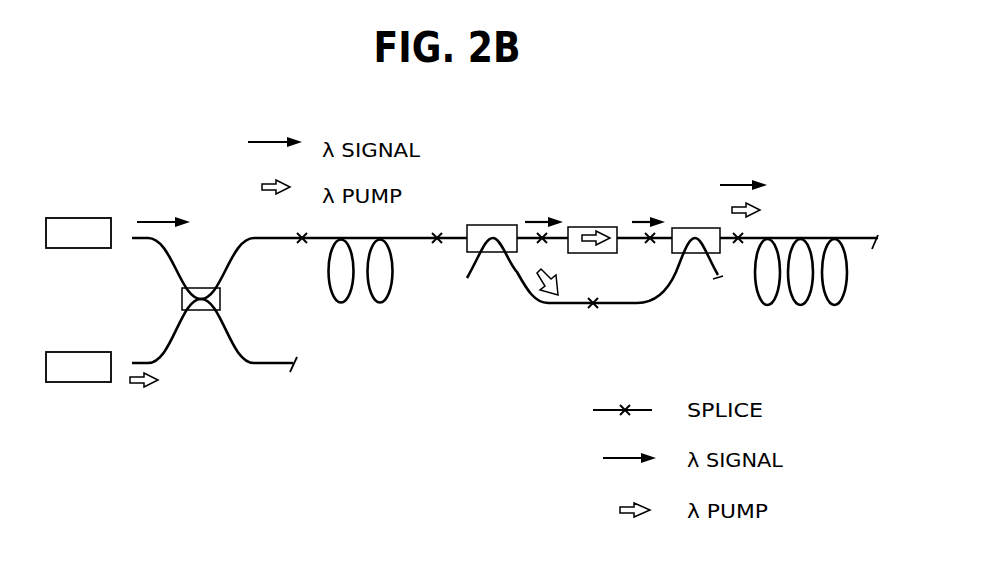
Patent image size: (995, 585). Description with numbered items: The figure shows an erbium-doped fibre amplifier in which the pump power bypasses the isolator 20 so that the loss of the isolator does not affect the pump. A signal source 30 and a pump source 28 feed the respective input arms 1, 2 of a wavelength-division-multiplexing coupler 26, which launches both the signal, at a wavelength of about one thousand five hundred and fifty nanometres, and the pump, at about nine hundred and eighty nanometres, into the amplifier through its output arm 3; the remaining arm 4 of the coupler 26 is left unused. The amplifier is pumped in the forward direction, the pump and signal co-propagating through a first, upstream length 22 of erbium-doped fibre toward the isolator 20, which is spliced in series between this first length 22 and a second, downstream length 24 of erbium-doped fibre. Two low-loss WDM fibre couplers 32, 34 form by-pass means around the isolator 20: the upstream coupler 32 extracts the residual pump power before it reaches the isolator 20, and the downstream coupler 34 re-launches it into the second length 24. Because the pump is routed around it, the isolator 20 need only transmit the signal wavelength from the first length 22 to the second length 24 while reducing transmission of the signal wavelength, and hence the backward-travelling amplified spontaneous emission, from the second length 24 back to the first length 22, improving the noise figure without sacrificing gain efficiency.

The input arm 1 is at (166, 268).
The input arm 2 is at (166, 331).
The output arm 3 is at (268, 266).
The coupler output port 4 is at (249, 335).
The fibre isolator 20 is at (592, 255).
The first length of erbium-doped fibre 22 is at (362, 324).
The second length of erbium-doped fibre 24 is at (800, 329).
The wavelength-division-multiplexing coupler 26 is at (200, 287).
The pump source 28 is at (66, 376).
The signal source 30 is at (66, 244).
The WDM fibre coupler 32 is at (497, 230).
The WDM fibre coupler 34 is at (698, 228).